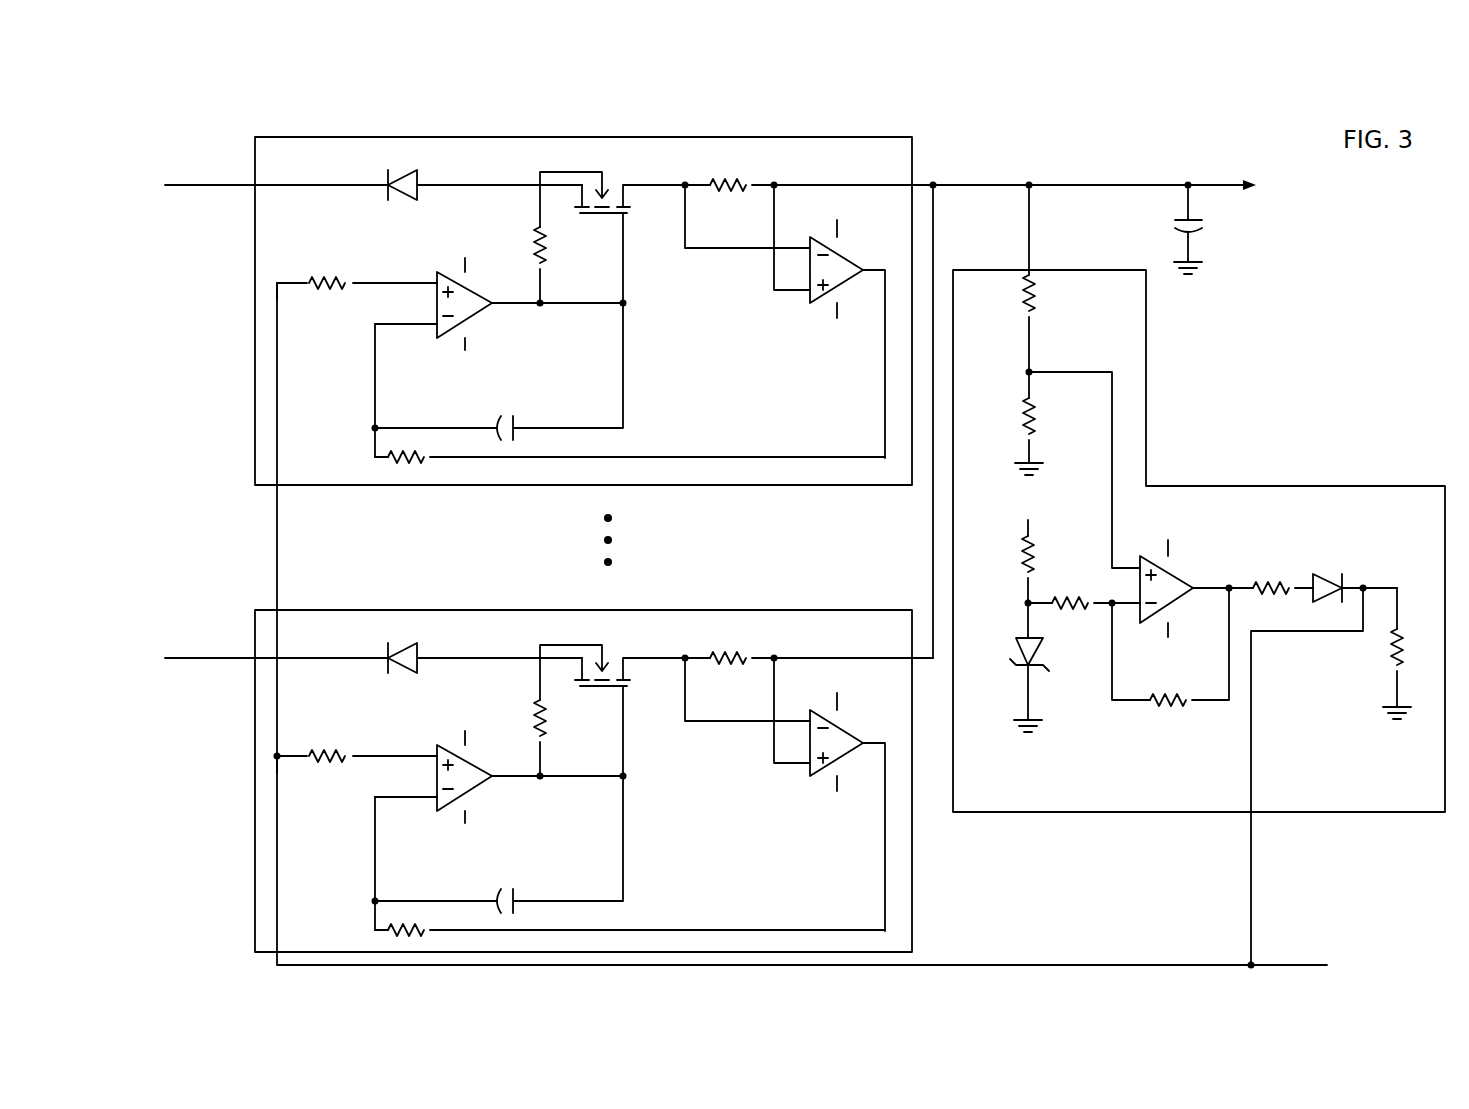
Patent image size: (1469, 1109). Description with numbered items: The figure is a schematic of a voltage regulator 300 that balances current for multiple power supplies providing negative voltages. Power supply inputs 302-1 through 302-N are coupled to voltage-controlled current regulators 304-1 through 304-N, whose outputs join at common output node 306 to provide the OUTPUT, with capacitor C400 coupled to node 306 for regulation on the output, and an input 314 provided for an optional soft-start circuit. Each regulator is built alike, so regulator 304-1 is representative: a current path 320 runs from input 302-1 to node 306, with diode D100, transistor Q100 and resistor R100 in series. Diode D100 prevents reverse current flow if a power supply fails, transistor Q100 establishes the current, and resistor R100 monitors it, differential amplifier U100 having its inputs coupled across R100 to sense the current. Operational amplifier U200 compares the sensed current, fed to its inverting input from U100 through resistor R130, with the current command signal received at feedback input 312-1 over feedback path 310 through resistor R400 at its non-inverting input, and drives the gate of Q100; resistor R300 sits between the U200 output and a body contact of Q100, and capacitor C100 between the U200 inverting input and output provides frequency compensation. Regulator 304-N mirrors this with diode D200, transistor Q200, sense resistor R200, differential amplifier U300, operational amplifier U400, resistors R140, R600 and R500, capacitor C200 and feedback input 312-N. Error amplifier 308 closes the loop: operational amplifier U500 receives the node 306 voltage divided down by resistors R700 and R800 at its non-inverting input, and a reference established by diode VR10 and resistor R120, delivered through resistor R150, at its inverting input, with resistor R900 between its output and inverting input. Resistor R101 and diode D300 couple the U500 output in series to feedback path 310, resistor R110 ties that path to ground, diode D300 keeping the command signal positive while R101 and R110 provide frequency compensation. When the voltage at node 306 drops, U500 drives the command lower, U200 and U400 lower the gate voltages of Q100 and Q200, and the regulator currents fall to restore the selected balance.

The voltage regulator 300 is at (1362, 351).
The power supply input 302-1 is at (209, 187).
The power supply input 302-N is at (238, 667).
The voltage-controlled current regulator 304-1 is at (255, 433).
The voltage-controlled current regulator 304-N is at (532, 781).
The common output node 306 is at (1133, 185).
The error amplifier 308 is at (1360, 486).
The feedback path 310 is at (1111, 965).
The feedback input 312-1 is at (292, 287).
The feedback input 312-N is at (317, 786).
The input for optional soft-start circuit 314 is at (1283, 965).
The current path 320 is at (648, 185).
The diode D100 is at (476, 170).
The diode D200 is at (476, 643).
The diode D300 is at (1352, 573).
The transistor Q100 is at (612, 222).
The transistor Q200 is at (612, 695).
The resistor R100 is at (798, 219).
The resistor R200 is at (808, 691).
The resistor R300 is at (574, 267).
The resistor R500 is at (574, 740).
The resistor R400 is at (357, 267).
The resistor R600 is at (356, 740).
The resistor R130 is at (597, 458).
The resistor R140 is at (597, 931).
The capacitor C100 is at (498, 380).
The capacitor C200 is at (498, 853).
The differential amplifier U100 is at (858, 324).
The differential amplifier U300 is at (858, 797).
The operational amplifier U200 is at (501, 304).
The operational amplifier U400 is at (501, 777).
The capacitor C400 is at (1224, 229).
The resistor R700 is at (1054, 376).
The resistor R800 is at (1005, 423).
The resistor R120 is at (1011, 548).
The diode VR10 is at (1007, 667).
The resistor R150 is at (1084, 587).
The operational amplifier U500 is at (1190, 588).
The resistor R900 is at (1170, 664).
The resistor R101 is at (1280, 574).
The resistor R110 is at (1370, 653).